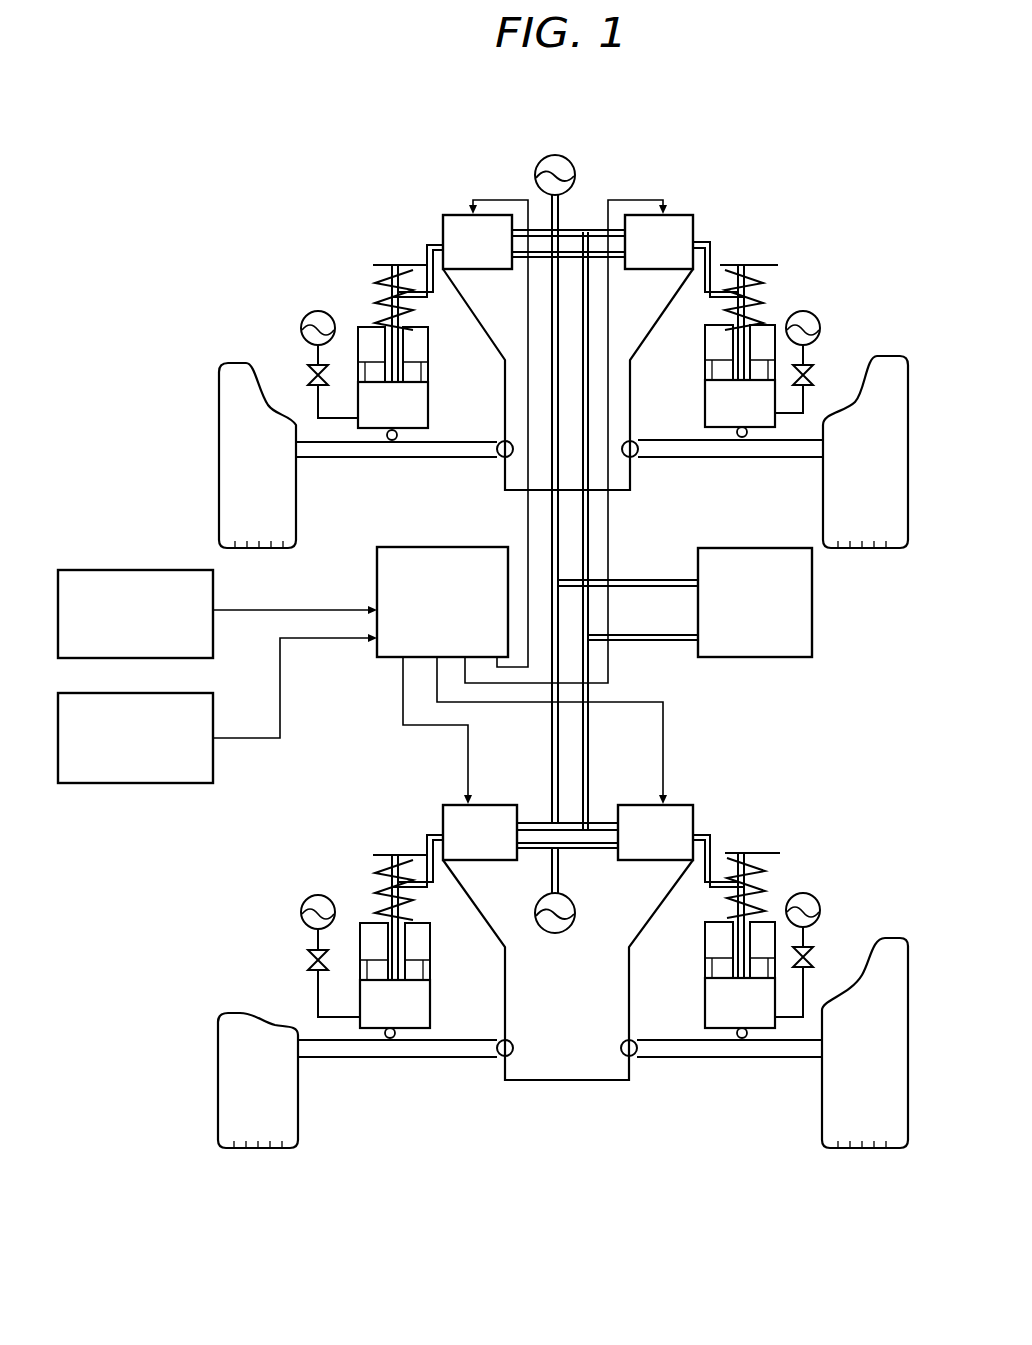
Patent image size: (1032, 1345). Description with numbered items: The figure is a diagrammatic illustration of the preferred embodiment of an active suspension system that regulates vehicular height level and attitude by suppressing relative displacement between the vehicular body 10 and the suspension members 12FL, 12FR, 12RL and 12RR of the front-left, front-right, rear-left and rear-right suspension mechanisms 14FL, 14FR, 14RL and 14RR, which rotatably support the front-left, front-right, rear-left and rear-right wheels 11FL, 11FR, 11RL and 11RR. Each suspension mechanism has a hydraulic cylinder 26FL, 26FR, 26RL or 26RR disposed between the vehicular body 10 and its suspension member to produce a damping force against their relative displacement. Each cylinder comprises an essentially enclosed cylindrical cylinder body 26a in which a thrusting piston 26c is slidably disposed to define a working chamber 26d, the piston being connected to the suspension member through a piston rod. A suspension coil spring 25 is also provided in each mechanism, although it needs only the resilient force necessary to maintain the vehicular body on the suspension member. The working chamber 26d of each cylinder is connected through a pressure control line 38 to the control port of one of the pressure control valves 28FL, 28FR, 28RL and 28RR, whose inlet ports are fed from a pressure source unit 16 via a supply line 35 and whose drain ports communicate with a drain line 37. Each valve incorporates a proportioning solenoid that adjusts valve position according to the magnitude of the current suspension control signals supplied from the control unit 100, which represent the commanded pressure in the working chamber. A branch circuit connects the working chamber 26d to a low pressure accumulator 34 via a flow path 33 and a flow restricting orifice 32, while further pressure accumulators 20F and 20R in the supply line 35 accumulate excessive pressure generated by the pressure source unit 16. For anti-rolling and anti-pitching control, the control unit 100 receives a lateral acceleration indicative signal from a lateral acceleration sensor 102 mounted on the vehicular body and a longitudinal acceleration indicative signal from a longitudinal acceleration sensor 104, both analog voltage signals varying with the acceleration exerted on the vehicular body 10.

The vehicular body 10 is at (640, 490).
The front-left wheel 11FL is at (219, 445).
The front-right wheel 11FR is at (830, 505).
The rear-left wheel 11RL is at (225, 1108).
The rear-right wheel 11RR is at (828, 1102).
The front-left suspension member 12FL is at (362, 460).
The front-right suspension member 12FR is at (703, 458).
The rear-left suspension member 12RL is at (453, 1060).
The rear-right suspension member 12RR is at (722, 1057).
The front-left suspension mechanism 14FL is at (305, 283).
The front-right suspension mechanism 14FR is at (812, 284).
The rear-left suspension mechanism 14RL is at (312, 890).
The rear-right suspension mechanism 14RR is at (832, 877).
The pressure source unit 16 is at (812, 618).
The front pressure accumulator 20F is at (575, 165).
The rear pressure accumulator 20R is at (575, 905).
The suspension coil spring 25 is at (375, 302).
The front-left hydraulic cylinder 26FL is at (426, 413).
The front-right hydraulic cylinder 26FR is at (712, 368).
The rear-left hydraulic cylinder 26RL is at (432, 960).
The rear-right hydraulic cylinder 26RR is at (720, 967).
The cylinder body 26a is at (428, 417).
The thrusting piston 26c is at (414, 368).
The working chamber 26d is at (414, 432).
The front-left pressure control valve 28FL is at (448, 214).
The front-right pressure control valve 28FR is at (692, 211).
The rear-left pressure control valve 28RL is at (495, 804).
The rear-right pressure control valve 28RR is at (630, 804).
The orifice 32 is at (310, 370).
The flow path 33 is at (333, 418).
The pressure accumulator 34 is at (305, 315).
The supply line 35 is at (665, 578).
The drain line 37 is at (660, 634).
The pressure control line 38 is at (425, 246).
The control unit 100 is at (470, 547).
The lateral acceleration sensor 102 is at (113, 570).
The longitudinal acceleration sensor 104 is at (130, 783).